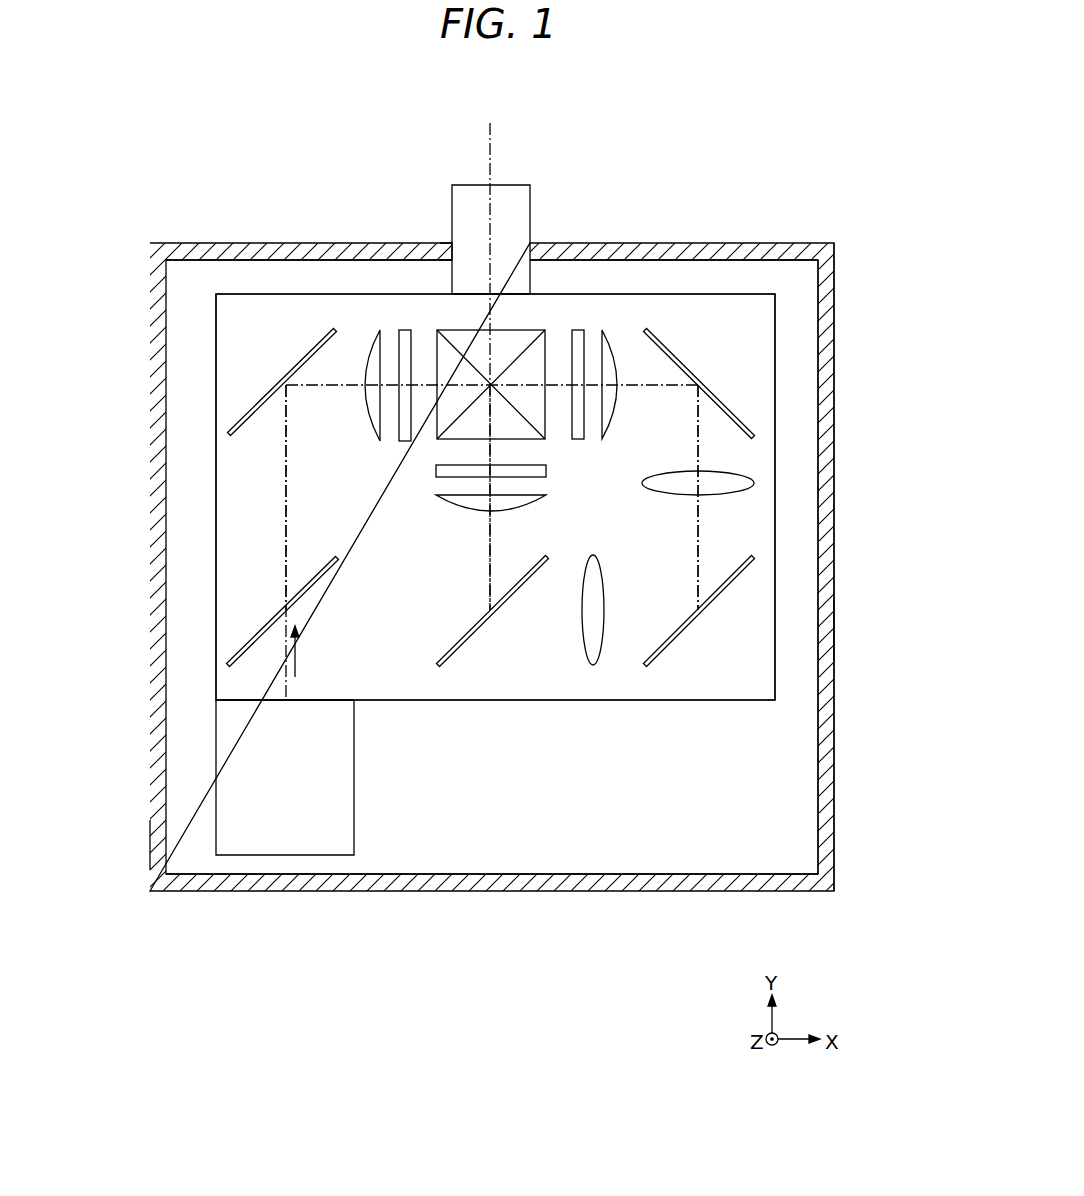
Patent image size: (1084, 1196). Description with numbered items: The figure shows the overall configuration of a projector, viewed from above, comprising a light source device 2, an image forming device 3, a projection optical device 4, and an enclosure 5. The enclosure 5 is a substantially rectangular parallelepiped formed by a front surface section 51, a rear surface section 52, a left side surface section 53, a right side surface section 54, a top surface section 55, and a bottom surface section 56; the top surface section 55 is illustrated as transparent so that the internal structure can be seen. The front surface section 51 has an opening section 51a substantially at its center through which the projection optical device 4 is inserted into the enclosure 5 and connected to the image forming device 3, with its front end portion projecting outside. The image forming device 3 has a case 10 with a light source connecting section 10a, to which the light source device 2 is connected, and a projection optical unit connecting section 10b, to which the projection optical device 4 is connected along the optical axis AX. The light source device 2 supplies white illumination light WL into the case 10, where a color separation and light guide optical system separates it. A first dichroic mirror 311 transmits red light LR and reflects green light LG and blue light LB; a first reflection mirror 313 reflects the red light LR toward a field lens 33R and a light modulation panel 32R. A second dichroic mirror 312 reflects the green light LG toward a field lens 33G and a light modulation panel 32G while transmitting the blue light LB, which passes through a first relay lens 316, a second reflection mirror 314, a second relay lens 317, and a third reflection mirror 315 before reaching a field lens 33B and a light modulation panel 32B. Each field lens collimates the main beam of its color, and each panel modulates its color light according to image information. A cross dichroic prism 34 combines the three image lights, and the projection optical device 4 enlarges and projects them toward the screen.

The enclosure 5 is at (175, 243).
The front surface section 51 is at (228, 242).
The opening section 51a is at (450, 246).
The rear surface section 52 is at (563, 883).
The left side surface section 53 is at (155, 852).
The right side surface section 54 is at (834, 629).
The top surface section 55 is at (794, 369).
The bottom surface section 56 is at (795, 313).
The projection optical device 4 is at (505, 197).
The image forming device 3 is at (348, 316).
The case 10 is at (776, 514).
The light source connecting section 10a is at (240, 702).
The projection optical unit connecting section 10b is at (503, 292).
The light source device 2 is at (292, 842).
The optical axis AX is at (490, 147).
The first reflection mirror 313 is at (253, 408).
The third reflection mirror 315 is at (668, 345).
The first dichroic mirror 311 is at (256, 633).
The second dichroic mirror 312 is at (490, 622).
The second reflection mirror 314 is at (690, 628).
The first relay lens 316 is at (600, 643).
The second relay lens 317 is at (740, 483).
The field lens 33R is at (373, 413).
The light modulation panel 32R is at (408, 437).
The cross dichroic prism 34 is at (523, 338).
The light modulation panel 32B is at (578, 340).
The field lens 33B is at (612, 338).
The light modulation panel 32G is at (533, 461).
The field lens 33G is at (533, 491).
The red light LR is at (287, 495).
The green light LG is at (492, 542).
The blue light LB is at (700, 540).
The illumination light WL is at (286, 682).